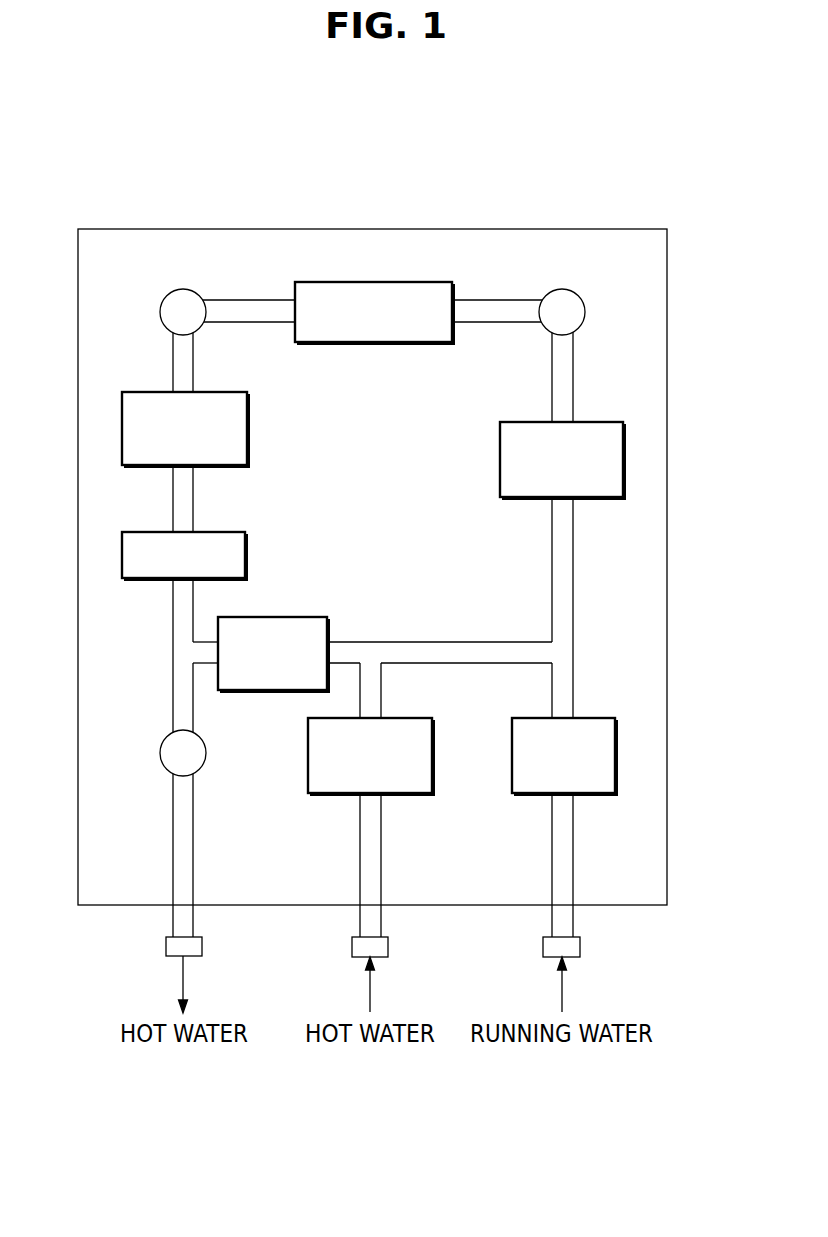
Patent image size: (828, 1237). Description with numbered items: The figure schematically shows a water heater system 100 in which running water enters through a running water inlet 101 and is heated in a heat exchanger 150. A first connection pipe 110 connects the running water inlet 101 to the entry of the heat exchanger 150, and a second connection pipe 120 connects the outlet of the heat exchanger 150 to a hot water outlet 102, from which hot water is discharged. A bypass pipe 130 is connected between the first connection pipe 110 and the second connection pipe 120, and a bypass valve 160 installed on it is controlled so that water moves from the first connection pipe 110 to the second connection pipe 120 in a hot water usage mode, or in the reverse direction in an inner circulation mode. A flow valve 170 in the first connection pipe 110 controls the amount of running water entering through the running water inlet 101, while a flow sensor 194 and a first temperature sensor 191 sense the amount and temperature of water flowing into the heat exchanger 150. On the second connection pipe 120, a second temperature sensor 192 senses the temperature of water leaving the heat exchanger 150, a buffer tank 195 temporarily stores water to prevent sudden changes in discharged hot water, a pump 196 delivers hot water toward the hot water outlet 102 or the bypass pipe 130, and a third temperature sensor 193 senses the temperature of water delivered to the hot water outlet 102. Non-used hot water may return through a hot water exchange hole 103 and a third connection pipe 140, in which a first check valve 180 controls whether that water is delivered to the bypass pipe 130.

The water heater system 100 is at (578, 188).
The running water inlet 101 is at (582, 947).
The hot water outlet 102 is at (203, 946).
The hot water exchange hole 103 is at (390, 947).
The first connection pipe 110 is at (573, 610).
The second connection pipe 120 is at (172, 600).
The bypass pipe 130 is at (442, 641).
The third connection pipe 140 is at (382, 852).
The heat exchanger 150 is at (377, 281).
The bypass valve 160 is at (275, 616).
The flow valve 170 is at (592, 718).
The first check valve 180 is at (412, 717).
The first temperature sensor 191 is at (585, 312).
The second temperature sensor 192 is at (158, 312).
The third temperature sensor 193 is at (158, 753).
The flow sensor 194 is at (602, 421).
The buffer tank 195 is at (223, 391).
The pump 196 is at (223, 531).